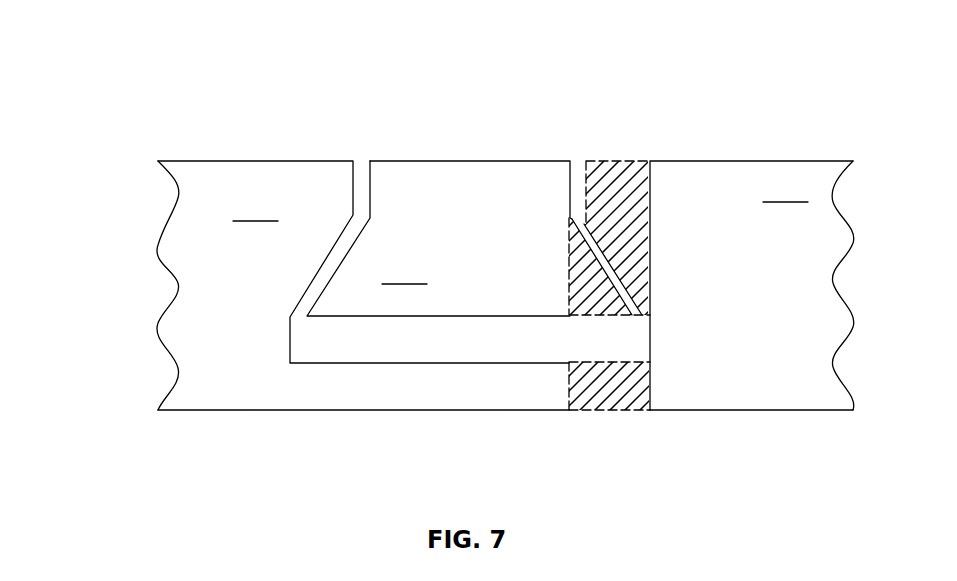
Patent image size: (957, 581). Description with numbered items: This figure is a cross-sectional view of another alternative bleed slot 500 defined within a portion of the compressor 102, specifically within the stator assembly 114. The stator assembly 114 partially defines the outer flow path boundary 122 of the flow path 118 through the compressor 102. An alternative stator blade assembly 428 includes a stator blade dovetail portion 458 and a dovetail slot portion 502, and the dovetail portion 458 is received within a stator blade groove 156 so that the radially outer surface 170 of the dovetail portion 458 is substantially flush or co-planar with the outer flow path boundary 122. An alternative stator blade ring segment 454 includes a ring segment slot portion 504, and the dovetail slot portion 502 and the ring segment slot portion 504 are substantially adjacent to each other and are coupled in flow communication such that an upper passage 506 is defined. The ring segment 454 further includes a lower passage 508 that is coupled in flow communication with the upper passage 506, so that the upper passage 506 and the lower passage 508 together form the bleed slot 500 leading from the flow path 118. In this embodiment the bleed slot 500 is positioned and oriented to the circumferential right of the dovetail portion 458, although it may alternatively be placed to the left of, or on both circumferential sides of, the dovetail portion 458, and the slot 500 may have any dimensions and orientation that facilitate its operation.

The compressor 102 is at (137, 63).
The stator assembly 114 is at (205, 111).
The outer flow path boundary 122 is at (228, 160).
The alternative stator blade ring segment 454 is at (505, 285).
The stator blade dovetail portion 458 is at (439, 238).
The alternative stator blade assembly 428 is at (405, 148).
The radially outer surface 170 is at (487, 160).
The flow path 118 is at (612, 118).
The upper passage 506 is at (631, 147).
The ring segment slot portion 504 is at (631, 204).
The dovetail slot portion 502 is at (566, 283).
The stator blade groove 156 is at (312, 339).
The bleed slot 500 is at (582, 436).
The lower passage 508 is at (620, 417).